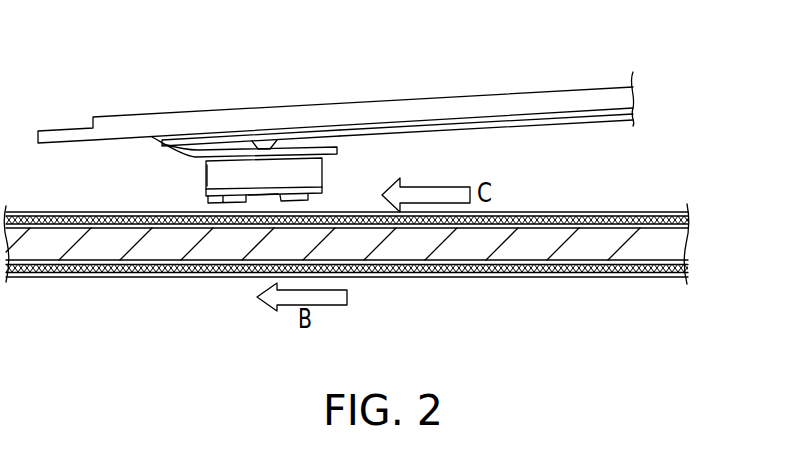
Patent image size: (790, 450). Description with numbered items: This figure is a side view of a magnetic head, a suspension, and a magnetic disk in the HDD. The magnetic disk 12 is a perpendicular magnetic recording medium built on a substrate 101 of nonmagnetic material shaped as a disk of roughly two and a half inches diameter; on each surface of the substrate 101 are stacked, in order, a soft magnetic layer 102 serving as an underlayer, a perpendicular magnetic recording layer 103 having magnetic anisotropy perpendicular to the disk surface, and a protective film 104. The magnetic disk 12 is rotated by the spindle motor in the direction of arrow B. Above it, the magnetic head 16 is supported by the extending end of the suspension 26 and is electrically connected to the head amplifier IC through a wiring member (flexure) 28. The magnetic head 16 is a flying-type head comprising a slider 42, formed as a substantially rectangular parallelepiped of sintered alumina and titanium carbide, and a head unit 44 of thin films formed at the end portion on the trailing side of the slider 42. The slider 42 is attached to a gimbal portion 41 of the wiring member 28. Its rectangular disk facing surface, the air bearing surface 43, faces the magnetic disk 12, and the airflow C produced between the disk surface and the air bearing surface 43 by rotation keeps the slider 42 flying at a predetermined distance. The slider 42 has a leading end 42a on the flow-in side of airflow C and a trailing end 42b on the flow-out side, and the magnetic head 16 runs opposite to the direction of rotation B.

The magnetic disk 12 is at (653, 186).
The magnetic head 16 is at (343, 172).
The suspension 26 is at (511, 103).
The wiring member (flexure) 28 is at (577, 118).
The gimbal portion 41 is at (323, 132).
The slider 42 is at (238, 167).
The leading end 42a is at (327, 163).
The trailing end 42b is at (207, 192).
The disk facing surface (air bearing surface, ABS) 43 is at (256, 212).
The head unit 44 is at (207, 174).
The substrate 101 is at (582, 248).
The soft magnetic layer 102 is at (688, 232).
The perpendicular magnetic recording layer 103 is at (613, 212).
The protective film 104 is at (672, 212).